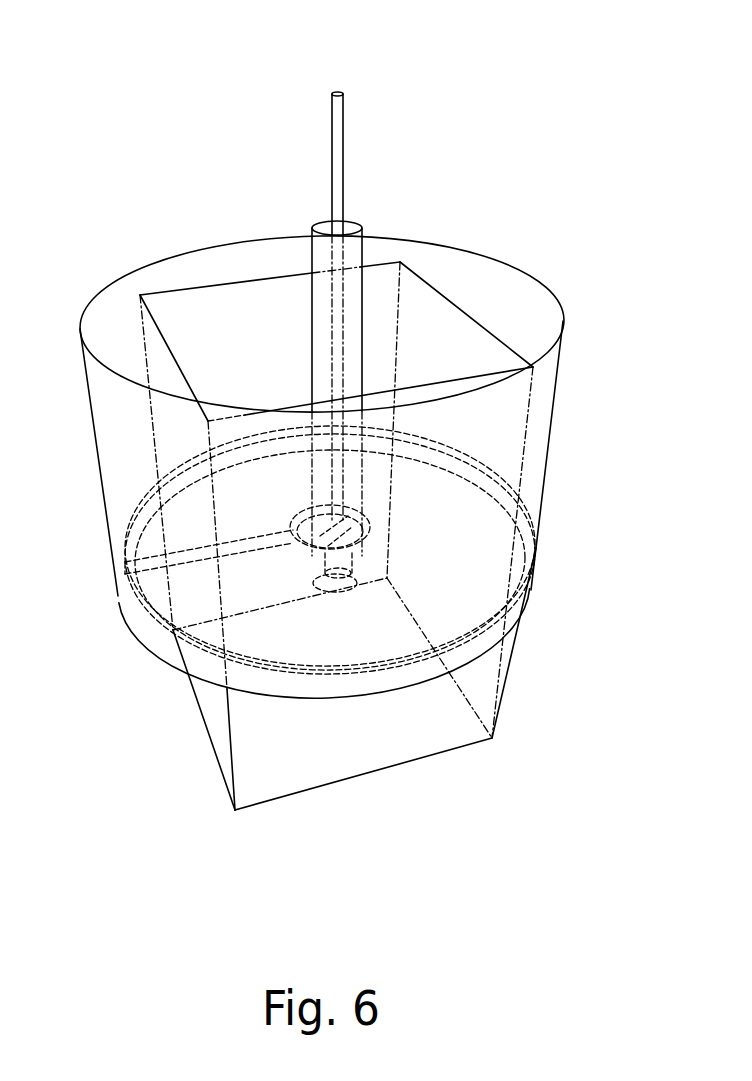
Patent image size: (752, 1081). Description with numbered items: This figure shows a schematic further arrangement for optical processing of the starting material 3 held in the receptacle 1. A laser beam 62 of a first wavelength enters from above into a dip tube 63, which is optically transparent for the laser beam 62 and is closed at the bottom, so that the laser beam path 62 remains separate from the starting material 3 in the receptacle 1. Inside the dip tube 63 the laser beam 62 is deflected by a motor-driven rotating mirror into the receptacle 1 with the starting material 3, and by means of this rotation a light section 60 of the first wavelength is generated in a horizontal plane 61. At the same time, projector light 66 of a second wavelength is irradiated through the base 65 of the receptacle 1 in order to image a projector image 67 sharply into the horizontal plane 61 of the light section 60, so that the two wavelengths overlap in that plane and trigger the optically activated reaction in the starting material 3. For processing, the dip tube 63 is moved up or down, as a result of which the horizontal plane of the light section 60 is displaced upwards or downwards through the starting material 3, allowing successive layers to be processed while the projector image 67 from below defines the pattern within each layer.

The receptacle 1 is at (520, 288).
The starting material 3 is at (101, 334).
The light section 60 is at (500, 552).
The horizontal plane 61 is at (152, 590).
The laser beam 62 is at (340, 92).
The dip tube 63 is at (352, 247).
The base 65 is at (163, 645).
The projector light 66 is at (282, 770).
The projector image 67 is at (485, 623).